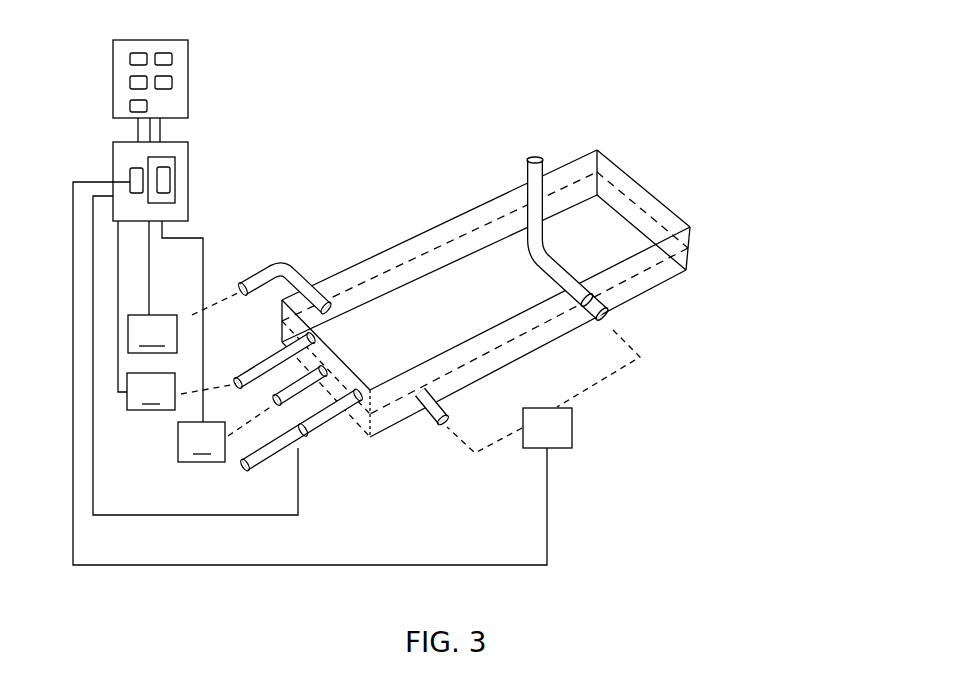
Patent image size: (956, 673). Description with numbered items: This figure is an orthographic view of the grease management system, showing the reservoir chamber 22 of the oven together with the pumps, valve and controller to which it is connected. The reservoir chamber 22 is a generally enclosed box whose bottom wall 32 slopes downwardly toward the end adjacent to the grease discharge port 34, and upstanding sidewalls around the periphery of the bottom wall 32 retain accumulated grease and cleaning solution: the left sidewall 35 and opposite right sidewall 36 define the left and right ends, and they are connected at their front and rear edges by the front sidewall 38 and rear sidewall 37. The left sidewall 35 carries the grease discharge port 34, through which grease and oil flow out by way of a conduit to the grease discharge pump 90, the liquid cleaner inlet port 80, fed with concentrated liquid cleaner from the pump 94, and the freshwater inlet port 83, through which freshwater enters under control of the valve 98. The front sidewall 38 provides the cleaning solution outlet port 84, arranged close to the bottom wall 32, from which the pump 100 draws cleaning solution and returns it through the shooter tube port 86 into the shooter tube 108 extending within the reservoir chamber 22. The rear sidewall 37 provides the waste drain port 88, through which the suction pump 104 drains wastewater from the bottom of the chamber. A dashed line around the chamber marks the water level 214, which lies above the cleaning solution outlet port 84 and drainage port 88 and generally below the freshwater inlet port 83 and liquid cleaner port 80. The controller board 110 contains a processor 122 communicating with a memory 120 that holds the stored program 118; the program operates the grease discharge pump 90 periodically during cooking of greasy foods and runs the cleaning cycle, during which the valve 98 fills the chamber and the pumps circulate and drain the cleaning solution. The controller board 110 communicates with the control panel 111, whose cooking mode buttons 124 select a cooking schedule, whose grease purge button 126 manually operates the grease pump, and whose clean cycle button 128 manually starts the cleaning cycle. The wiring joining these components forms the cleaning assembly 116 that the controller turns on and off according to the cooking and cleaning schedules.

The reservoir chamber 22 is at (509, 282).
The bottom wall 32 is at (459, 301).
The grease discharge port 34 is at (341, 358).
The left sidewall 35 is at (351, 406).
The right sidewall 36 is at (645, 201).
The rear sidewall 37 is at (406, 247).
The front sidewall 38 is at (540, 334).
The liquid cleaner inlet port 80 is at (318, 332).
The freshwater inlet port 83 is at (323, 425).
The cleaning solution outlet port 84 is at (421, 398).
The shooter tube port 86 is at (611, 306).
The waste drain port 88 is at (336, 302).
The grease discharge pump 90 is at (225, 434).
The pump 94 is at (181, 391).
The valve 98 is at (306, 437).
The pump 100 is at (543, 391).
The suction pump 104 is at (184, 322).
The shooter tube 108 is at (580, 240).
The controller board 110 is at (163, 169).
The control panel 111 is at (155, 59).
The cleaning assembly 116 is at (205, 598).
The stored program 118 is at (176, 160).
The memory 120 is at (175, 199).
The processor 122 is at (111, 181).
The cooking mode buttons 124 is at (130, 57).
The grease purge button 126 is at (130, 82).
The clean cycle button 128 is at (130, 106).
The water level 214 is at (655, 264).